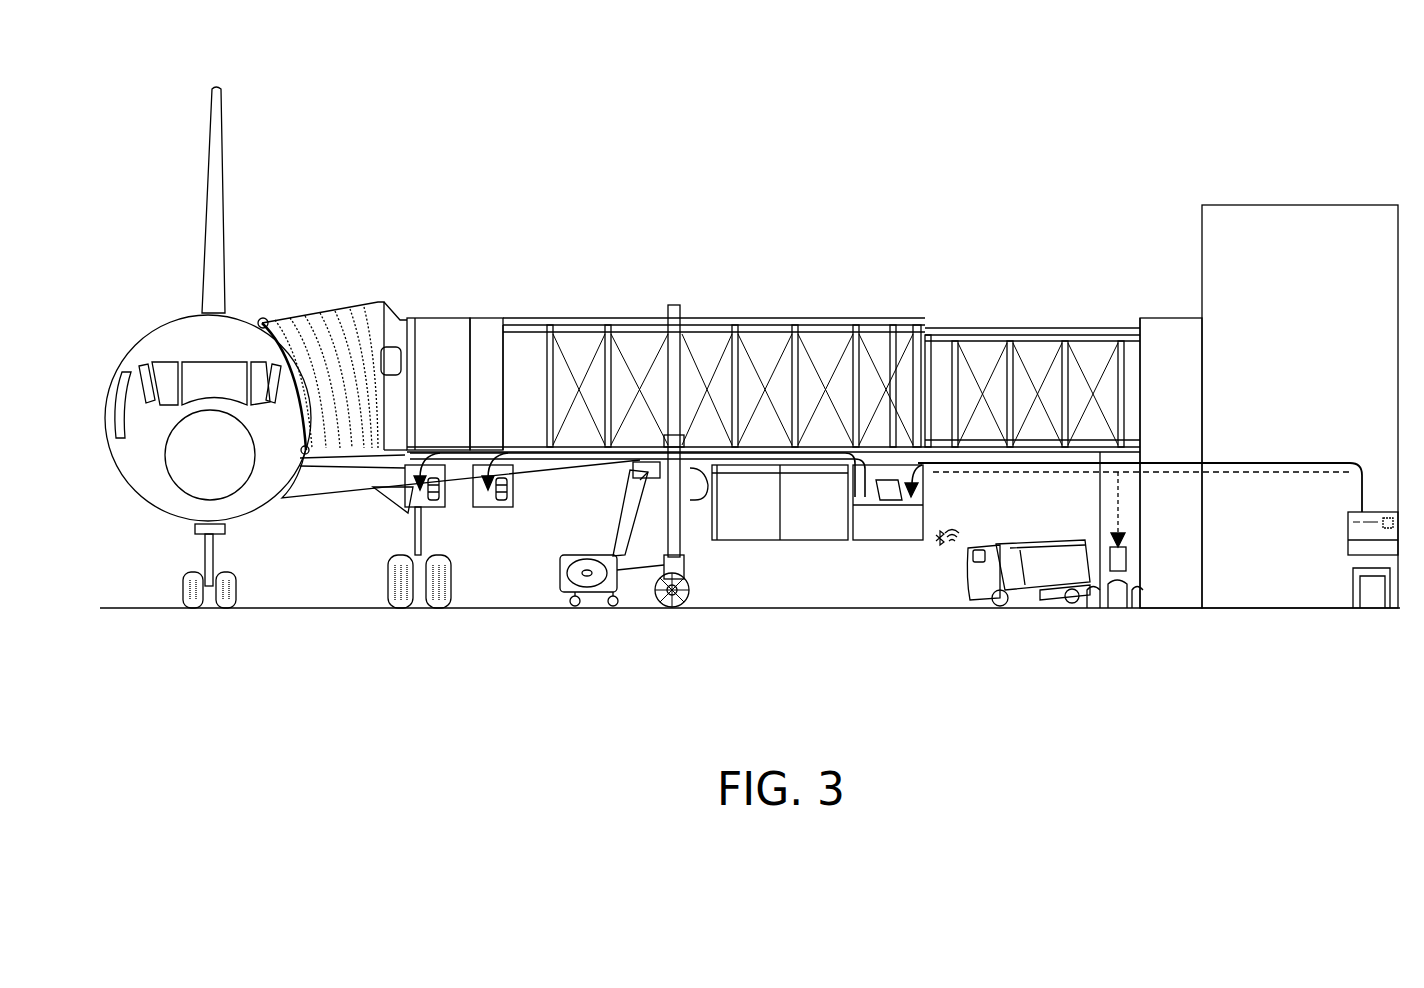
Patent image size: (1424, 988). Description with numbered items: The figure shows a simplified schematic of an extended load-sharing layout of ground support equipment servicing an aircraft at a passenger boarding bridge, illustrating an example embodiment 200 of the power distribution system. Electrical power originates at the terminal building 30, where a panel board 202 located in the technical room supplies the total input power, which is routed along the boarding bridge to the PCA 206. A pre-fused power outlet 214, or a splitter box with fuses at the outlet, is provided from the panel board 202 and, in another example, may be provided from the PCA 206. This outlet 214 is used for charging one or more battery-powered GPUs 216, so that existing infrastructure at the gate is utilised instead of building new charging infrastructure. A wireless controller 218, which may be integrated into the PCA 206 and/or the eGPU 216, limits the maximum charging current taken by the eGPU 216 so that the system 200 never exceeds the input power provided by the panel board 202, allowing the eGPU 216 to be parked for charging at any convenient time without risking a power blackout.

The embodiment of the power distribution system 200 is at (917, 178).
The terminal building 30 is at (1213, 215).
The panel board 202 is at (1372, 600).
The PCA 206 is at (872, 540).
The pre-fused power outlet 214 is at (1125, 557).
The battery-powered GPU 216 is at (1037, 585).
The wireless controller 218 is at (952, 548).